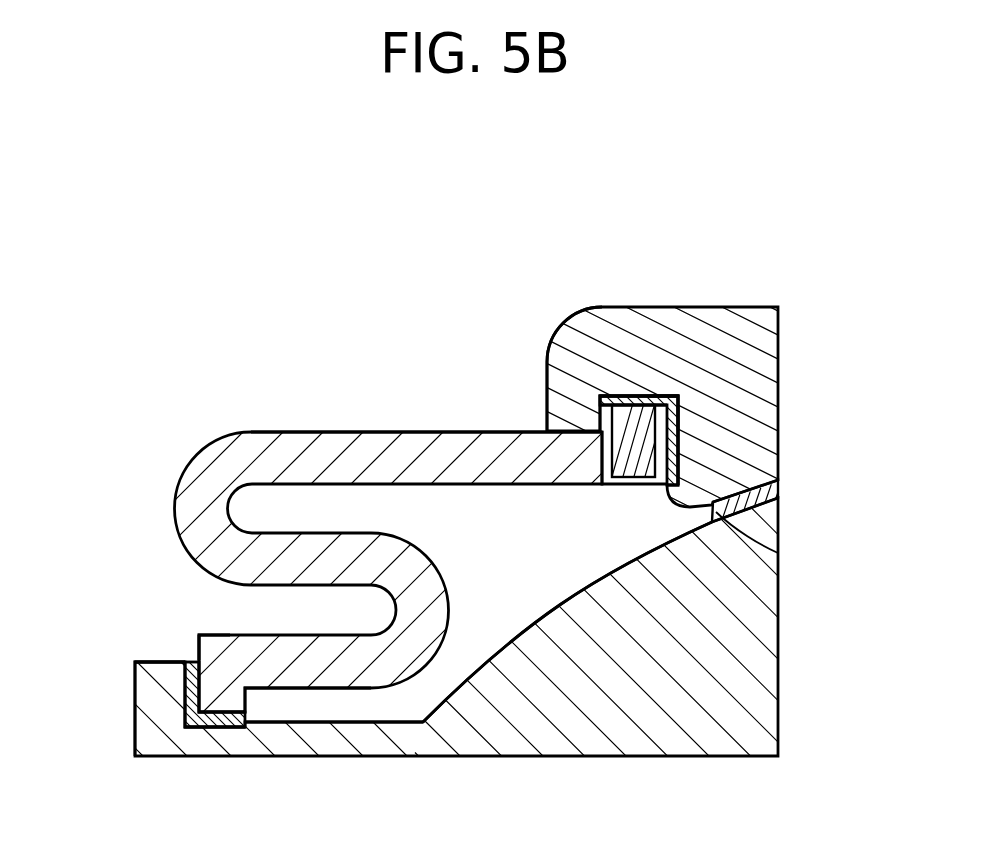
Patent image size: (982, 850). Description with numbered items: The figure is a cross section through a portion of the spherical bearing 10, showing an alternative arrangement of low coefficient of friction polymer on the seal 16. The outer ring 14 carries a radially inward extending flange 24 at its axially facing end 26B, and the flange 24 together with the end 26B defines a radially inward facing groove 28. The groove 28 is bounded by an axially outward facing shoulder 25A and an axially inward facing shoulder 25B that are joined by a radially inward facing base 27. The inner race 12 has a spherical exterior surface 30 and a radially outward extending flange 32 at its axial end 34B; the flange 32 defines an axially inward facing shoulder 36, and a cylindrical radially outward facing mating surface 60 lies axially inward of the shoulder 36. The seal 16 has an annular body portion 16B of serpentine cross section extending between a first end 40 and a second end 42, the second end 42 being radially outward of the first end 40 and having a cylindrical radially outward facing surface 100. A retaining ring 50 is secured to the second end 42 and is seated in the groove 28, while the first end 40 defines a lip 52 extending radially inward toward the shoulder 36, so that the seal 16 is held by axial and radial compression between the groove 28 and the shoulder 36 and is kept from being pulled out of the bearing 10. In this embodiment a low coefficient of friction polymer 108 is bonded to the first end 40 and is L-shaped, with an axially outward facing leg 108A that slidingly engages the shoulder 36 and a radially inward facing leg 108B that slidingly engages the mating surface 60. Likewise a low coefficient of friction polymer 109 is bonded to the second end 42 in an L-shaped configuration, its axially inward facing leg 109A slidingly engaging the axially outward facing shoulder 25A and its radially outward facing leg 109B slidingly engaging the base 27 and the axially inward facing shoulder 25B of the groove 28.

The spherical bearing 10 is at (122, 312).
The inner race 12 is at (757, 693).
The outer ring 14 is at (763, 404).
The seal 16 is at (476, 517).
The annular body portion 16B is at (261, 440).
The radially inward extending flange 24 is at (590, 418).
The axially outward facing shoulder 25A is at (680, 418).
The axially inward facing shoulder 25B is at (583, 370).
The axially facing end 26B is at (547, 382).
The radially inward facing base 27 is at (682, 400).
The radially inward facing groove 28 is at (623, 384).
The spherical exterior surface 30 is at (755, 602).
The radially outward extending flange 32 is at (162, 720).
The axial end 34B is at (135, 718).
The axially inward facing shoulder 36 is at (190, 700).
The first end 40 is at (222, 655).
The second end 42 is at (603, 457).
The retaining ring 50 is at (740, 458).
The lip 52 is at (207, 642).
The cylindrical radially outward facing mating surface 60 is at (315, 710).
The cylindrical radially outward facing surface 100 is at (650, 393).
The low coefficient of friction polymer 108 is at (206, 738).
The axially outward facing leg 108A is at (190, 680).
The radially inward facing leg 108B is at (233, 722).
The low coefficient of friction polymer 109 is at (700, 445).
The axially inward facing leg 109A is at (778, 553).
The radially outward facing leg 109B is at (633, 403).